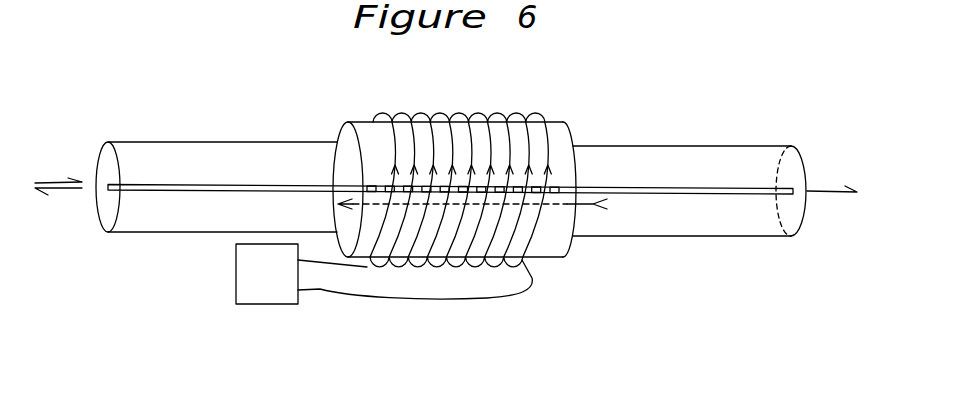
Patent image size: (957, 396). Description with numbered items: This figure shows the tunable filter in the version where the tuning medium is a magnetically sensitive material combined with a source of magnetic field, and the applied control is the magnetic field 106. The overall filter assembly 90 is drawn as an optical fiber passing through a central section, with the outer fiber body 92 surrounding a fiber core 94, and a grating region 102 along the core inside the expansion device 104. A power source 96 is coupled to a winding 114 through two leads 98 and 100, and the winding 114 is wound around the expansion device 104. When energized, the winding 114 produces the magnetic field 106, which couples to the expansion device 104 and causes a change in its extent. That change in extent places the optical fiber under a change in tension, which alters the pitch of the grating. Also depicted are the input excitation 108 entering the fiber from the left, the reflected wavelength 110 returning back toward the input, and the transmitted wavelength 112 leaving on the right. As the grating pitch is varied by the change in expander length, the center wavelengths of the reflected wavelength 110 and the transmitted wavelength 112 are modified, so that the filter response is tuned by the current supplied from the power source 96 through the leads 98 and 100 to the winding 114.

The tunable fiber grating assembly 90 is at (213, 121).
The fiber cladding tube 92 is at (208, 233).
The optical fiber core 94 is at (173, 181).
The power source 96 is at (267, 274).
The lead 98 is at (337, 268).
The lead 100 is at (355, 297).
The fiber Bragg grating 102 is at (555, 183).
The expansion device 104 is at (348, 117).
The magnetic field 106 is at (582, 210).
The input excitation 108 is at (58, 156).
The reflected wavelength 110 is at (58, 214).
The transmitted wavelength 112 is at (832, 163).
The winding 114 is at (377, 112).